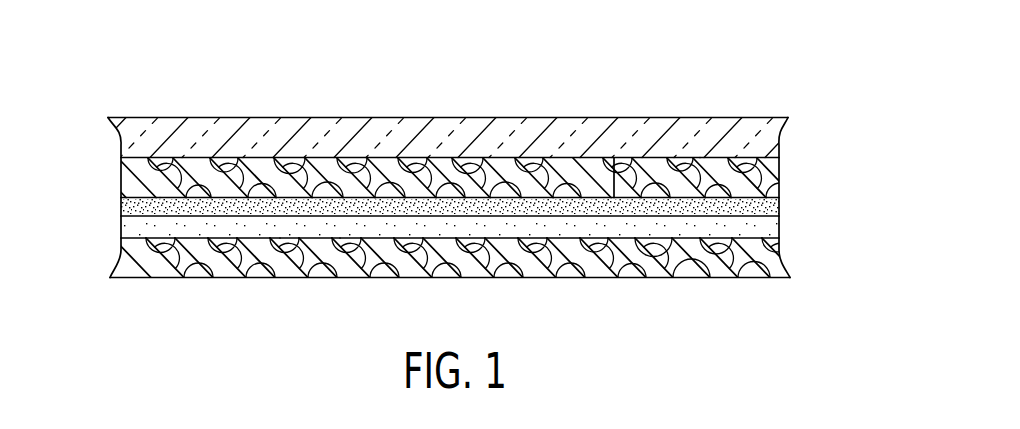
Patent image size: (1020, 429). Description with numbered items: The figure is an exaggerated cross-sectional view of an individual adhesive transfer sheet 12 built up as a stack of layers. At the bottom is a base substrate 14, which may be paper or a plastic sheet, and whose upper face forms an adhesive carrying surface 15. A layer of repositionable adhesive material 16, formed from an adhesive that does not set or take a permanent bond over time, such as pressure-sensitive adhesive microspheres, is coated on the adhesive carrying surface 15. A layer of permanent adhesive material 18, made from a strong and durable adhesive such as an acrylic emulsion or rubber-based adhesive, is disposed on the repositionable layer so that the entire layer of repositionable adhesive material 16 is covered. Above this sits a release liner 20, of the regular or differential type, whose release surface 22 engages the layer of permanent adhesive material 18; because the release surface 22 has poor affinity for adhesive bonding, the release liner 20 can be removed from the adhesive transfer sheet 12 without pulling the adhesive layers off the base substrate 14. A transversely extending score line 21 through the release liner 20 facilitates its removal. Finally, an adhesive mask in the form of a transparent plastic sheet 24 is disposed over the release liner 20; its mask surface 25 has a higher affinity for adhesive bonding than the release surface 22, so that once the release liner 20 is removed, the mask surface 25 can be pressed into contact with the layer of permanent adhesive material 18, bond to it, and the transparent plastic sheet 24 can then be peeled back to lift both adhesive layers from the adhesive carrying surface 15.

The adhesive transfer sheet 12 is at (826, 108).
The base substrate 14 is at (629, 262).
The adhesive carrying surface 15 is at (308, 238).
The layer of repositionable adhesive material 16 is at (765, 225).
The layer of permanent adhesive material 18 is at (768, 205).
The release liner 20 is at (716, 170).
The score line 21 is at (625, 165).
The release surface 22 is at (148, 201).
The transparent plastic sheet 24 is at (288, 126).
The mask surface 25 is at (369, 160).